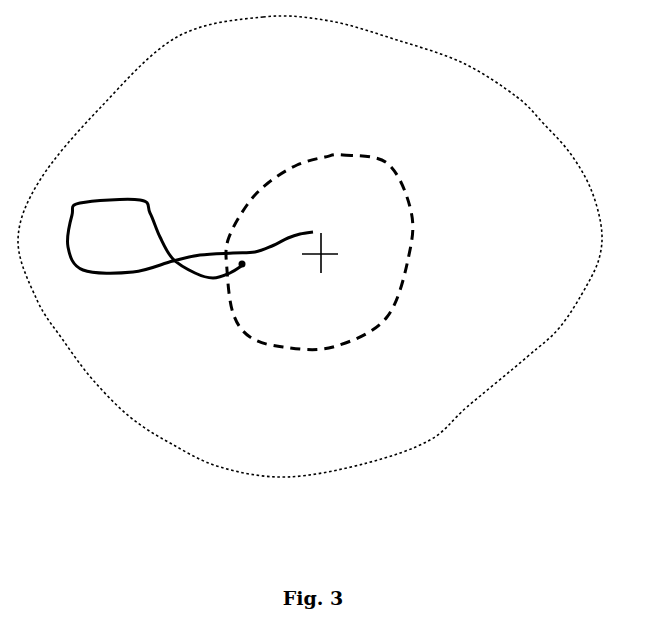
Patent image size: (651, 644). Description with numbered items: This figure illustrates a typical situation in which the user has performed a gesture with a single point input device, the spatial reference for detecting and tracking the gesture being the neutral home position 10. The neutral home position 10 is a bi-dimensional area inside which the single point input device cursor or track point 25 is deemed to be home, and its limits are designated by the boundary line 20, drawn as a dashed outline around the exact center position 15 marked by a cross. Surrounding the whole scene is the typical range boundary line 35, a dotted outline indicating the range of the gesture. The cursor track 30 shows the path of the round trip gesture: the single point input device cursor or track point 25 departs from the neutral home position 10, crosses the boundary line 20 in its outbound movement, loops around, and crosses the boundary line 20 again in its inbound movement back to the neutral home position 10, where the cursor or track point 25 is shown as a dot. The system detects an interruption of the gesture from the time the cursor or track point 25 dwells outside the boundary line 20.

The neutral home position 10 is at (337, 313).
The exact center position 15 is at (328, 250).
The boundary line 20 is at (253, 200).
The single point input device cursor or track point 25 is at (243, 268).
The cursor track 30 is at (143, 273).
The typical range boundary line 35 is at (527, 357).